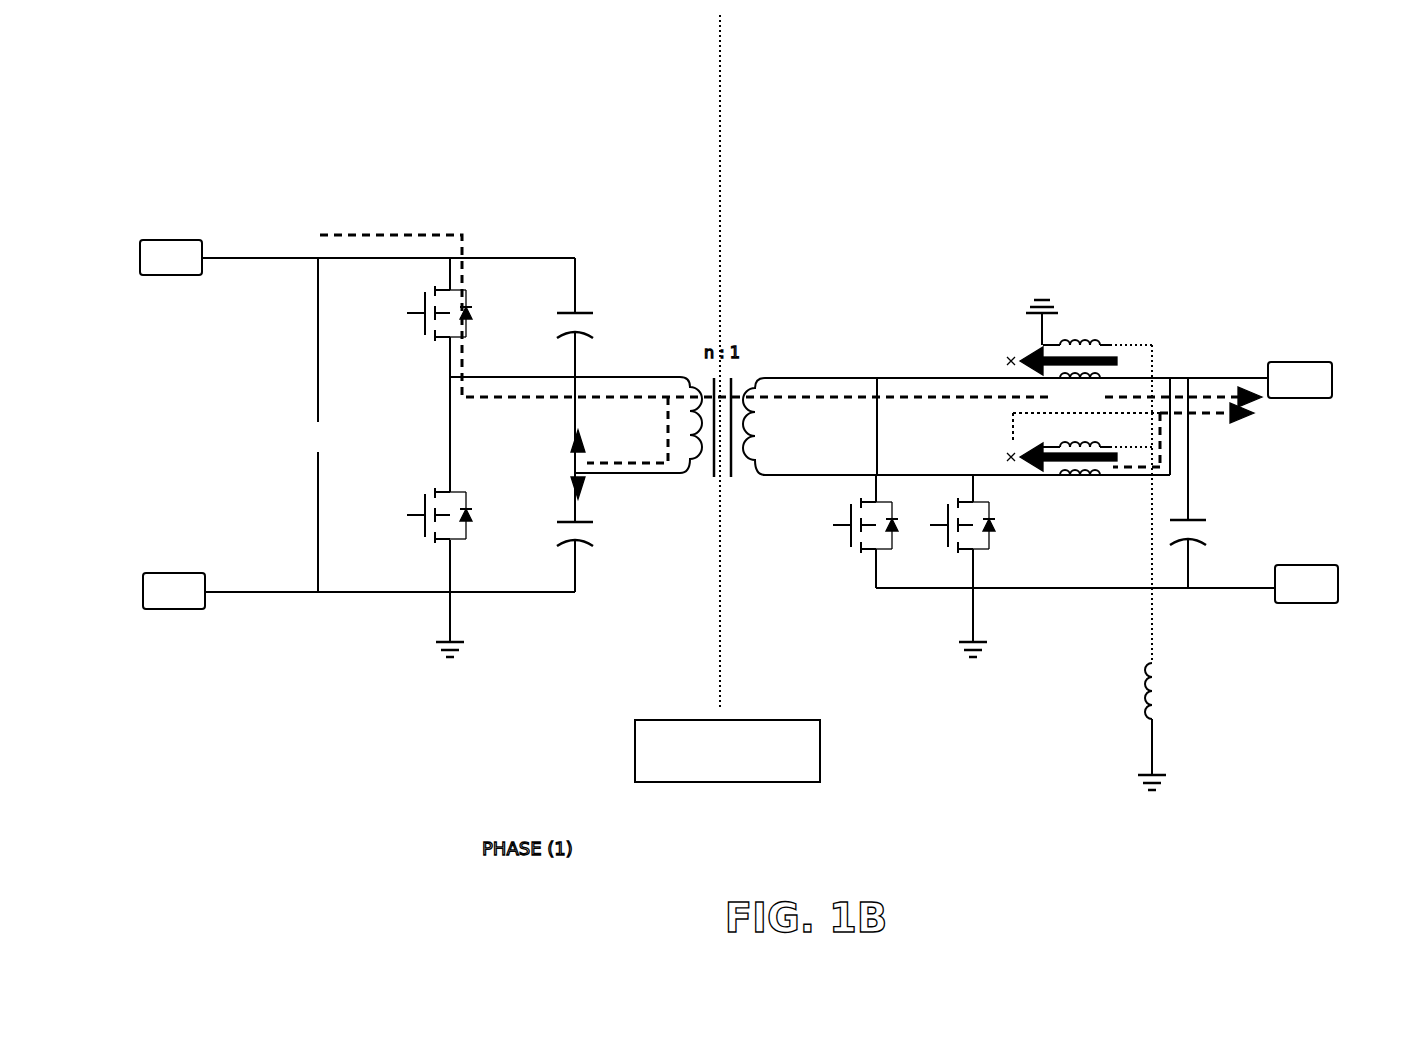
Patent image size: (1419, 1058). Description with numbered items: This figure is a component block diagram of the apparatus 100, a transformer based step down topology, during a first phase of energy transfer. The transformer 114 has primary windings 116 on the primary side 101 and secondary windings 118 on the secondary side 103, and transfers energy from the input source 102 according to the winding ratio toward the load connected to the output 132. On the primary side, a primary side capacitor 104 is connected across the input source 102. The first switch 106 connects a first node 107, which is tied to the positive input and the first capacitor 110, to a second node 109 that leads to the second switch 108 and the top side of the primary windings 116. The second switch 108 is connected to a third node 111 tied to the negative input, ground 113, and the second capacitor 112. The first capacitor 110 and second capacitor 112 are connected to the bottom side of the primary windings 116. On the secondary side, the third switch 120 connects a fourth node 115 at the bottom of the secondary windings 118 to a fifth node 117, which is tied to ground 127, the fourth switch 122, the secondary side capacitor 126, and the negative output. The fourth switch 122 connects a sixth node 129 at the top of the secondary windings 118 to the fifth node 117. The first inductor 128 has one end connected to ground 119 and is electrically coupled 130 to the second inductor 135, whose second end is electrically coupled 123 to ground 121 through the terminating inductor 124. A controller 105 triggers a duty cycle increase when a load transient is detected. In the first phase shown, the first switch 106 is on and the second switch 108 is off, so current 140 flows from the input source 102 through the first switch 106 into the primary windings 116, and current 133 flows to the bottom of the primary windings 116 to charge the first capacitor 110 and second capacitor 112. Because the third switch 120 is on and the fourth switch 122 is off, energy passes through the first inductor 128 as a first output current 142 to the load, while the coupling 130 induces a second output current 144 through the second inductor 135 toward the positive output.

The apparatus 100 is at (243, 78).
The primary side 101 is at (611, 133).
The input source 102 is at (183, 242).
The secondary side 103 is at (834, 133).
The primary side capacitor (Cinput) 104 is at (318, 405).
The controller 105 is at (750, 782).
The first switch (S1) 106 is at (440, 343).
The first node 107 is at (497, 258).
The second switch (S2) 108 is at (440, 545).
The second node 109 is at (448, 440).
The first capacitor (C1) 110 is at (580, 310).
The third node 111 is at (495, 592).
The second capacitor (C2) 112 is at (590, 541).
The ground 113 is at (462, 657).
The transformer 114 is at (737, 318).
The fourth node 115 is at (898, 473).
The primary windings 116 is at (697, 468).
The fifth node 117 is at (1002, 588).
The secondary windings 118 is at (762, 426).
The ground 119 is at (1036, 313).
The third switch (S3) 120 is at (990, 542).
The ground 121 is at (1150, 793).
The fourth switch (S4) 122 is at (848, 517).
The electrical coupling 123 is at (1150, 622).
The LC terminating inductor (LC) 124 is at (1146, 697).
The secondary side capacitor 126 is at (1197, 520).
The ground 127 is at (976, 659).
The first inductor (L1) 128 is at (1090, 343).
The sixth node 129 is at (827, 373).
The electrical coupling 130 is at (1155, 343).
The output 132 is at (1302, 362).
The current 133 is at (590, 462).
The second inductor (L2) 135 is at (1063, 477).
The current 140 is at (548, 400).
The first output current 142 is at (1215, 397).
The second output current 144 is at (1203, 415).